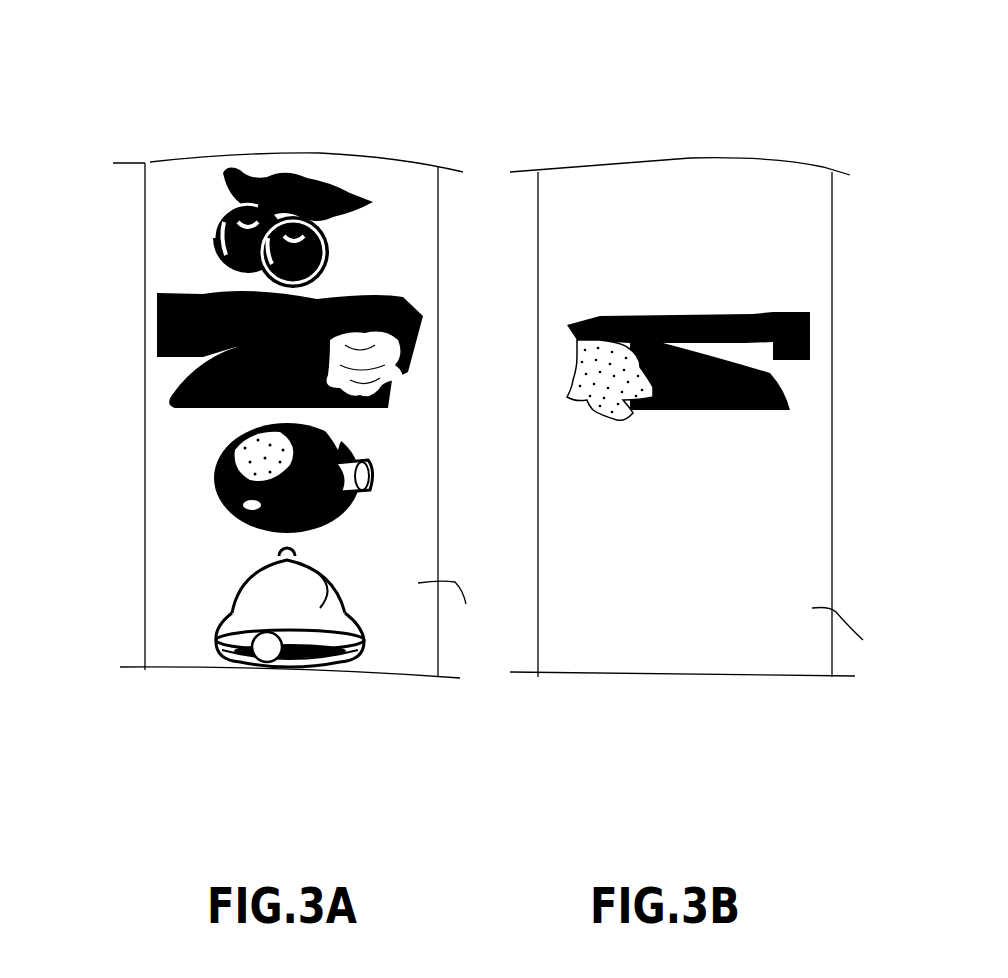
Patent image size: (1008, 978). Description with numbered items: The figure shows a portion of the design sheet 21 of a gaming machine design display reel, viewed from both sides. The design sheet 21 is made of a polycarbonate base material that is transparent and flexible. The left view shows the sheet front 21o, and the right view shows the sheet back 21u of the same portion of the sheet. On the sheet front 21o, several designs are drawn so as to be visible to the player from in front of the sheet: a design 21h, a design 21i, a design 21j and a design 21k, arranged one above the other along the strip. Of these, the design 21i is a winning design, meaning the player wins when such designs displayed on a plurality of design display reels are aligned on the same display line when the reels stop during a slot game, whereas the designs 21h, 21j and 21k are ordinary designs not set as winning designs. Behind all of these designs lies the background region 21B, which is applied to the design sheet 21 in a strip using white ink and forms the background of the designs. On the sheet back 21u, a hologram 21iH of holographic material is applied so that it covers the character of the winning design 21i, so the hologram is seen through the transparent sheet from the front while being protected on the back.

In FIG. 3A, the design sheet 21 is at (311, 145).
In FIG. 3B, the design sheet 21 is at (697, 140).
In FIG. 3A, the background region 21B is at (456, 611).
In FIG. 3B, the background region 21B is at (858, 641).
In FIG. 3A, the design 21h is at (212, 224).
In FIG. 3A, the design 21i is at (397, 303).
In FIG. 3B, the design 21i is at (753, 315).
In FIG. 3A, the design 21j is at (213, 474).
In FIG. 3A, the design 21k is at (232, 597).
In FIG. 3A, the sheet front 21o is at (425, 206).
In FIG. 3B, the sheet back 21u is at (817, 210).
In FIG. 3B, the hologram 21iH is at (570, 370).